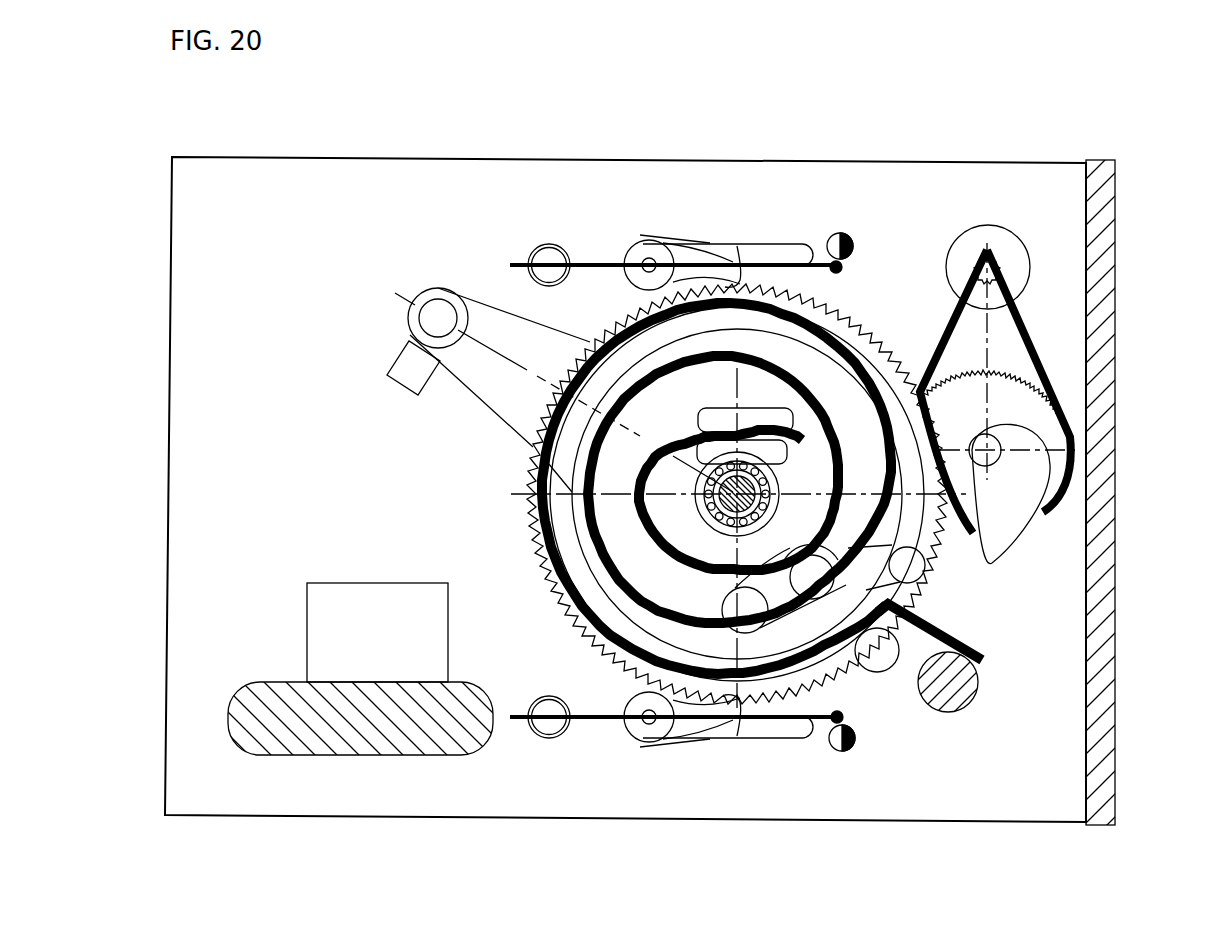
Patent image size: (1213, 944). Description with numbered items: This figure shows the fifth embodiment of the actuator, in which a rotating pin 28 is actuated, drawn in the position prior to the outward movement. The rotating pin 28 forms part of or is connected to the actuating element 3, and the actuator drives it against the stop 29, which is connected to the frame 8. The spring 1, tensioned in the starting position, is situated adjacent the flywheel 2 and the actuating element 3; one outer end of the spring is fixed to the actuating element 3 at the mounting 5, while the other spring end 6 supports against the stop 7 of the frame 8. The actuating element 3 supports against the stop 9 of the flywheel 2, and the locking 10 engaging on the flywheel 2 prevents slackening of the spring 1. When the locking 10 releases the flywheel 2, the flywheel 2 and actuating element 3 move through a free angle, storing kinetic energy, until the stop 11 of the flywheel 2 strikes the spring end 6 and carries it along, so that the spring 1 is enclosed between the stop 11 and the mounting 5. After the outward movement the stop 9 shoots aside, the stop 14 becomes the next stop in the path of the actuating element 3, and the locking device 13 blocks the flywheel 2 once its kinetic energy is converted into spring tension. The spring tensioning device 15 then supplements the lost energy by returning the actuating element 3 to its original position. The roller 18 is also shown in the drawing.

The spring 1 is at (852, 360).
The flywheel 2 is at (907, 408).
The actuating element 3 is at (820, 383).
The mounting 5 is at (772, 430).
The spring end 6 is at (970, 643).
The stop 7 is at (968, 679).
The frame 8 is at (1100, 735).
The stop 9 is at (753, 598).
The locking 10 is at (695, 258).
The stop 11 is at (877, 650).
The locking device 13 is at (688, 725).
The stop 14 is at (810, 577).
The spring tensioning device 15 is at (1017, 535).
The roller 18 is at (907, 567).
The rotating pin 28 is at (487, 340).
The stop 29 is at (363, 632).